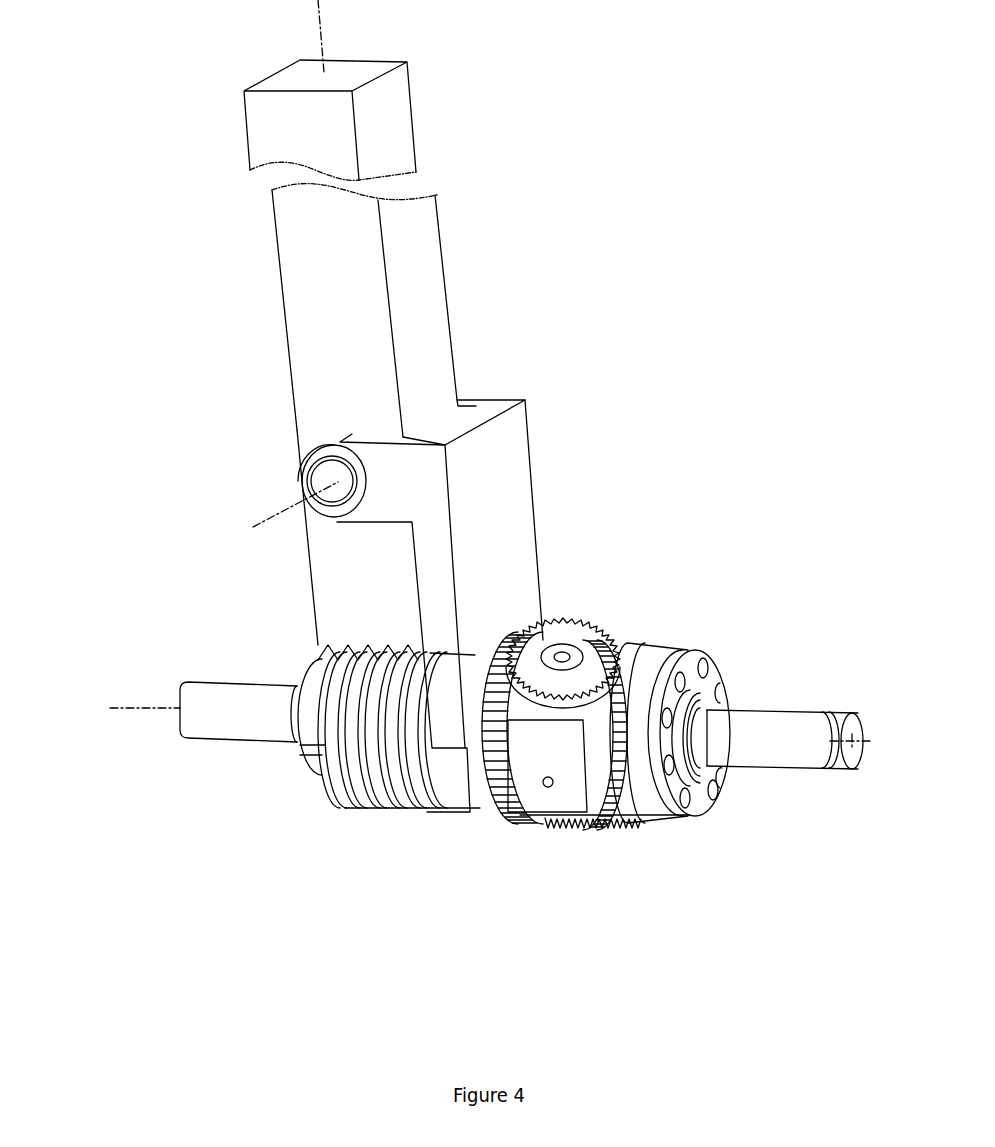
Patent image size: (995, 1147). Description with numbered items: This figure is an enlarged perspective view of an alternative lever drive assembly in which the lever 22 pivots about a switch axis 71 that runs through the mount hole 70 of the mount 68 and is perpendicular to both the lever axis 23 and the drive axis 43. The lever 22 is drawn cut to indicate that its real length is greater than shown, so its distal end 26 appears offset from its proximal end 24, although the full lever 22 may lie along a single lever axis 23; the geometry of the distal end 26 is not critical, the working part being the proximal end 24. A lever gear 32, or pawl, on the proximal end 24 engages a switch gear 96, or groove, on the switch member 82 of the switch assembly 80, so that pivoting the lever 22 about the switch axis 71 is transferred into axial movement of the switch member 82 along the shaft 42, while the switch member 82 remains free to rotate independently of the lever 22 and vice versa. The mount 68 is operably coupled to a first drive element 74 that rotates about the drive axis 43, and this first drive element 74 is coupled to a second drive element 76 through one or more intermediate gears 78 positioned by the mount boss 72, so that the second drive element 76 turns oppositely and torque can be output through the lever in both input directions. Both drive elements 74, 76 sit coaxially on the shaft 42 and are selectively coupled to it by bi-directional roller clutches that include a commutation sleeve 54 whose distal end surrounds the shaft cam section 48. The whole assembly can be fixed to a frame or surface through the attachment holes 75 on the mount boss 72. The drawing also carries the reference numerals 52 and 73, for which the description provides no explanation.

The lever 22 is at (205, 235).
The lever axis 23 is at (317, 20).
The lever proximal end 24 is at (282, 600).
The lever distal end 26 is at (243, 85).
The lever gear 32 is at (320, 648).
The shaft 42 is at (762, 807).
The drive axis 43 is at (873, 744).
The shaft cam section 48 is at (755, 694).
The output shaft 52 is at (812, 692).
The commutation sleeve 54 is at (754, 665).
The mount 68 is at (562, 452).
The mount hole 70 is at (357, 437).
The switch axis 71 is at (252, 508).
The mount boss 72 is at (530, 797).
The pin bore 73 is at (318, 482).
The first drive element 74 is at (483, 785).
The attachment holes 75 is at (565, 655).
The second drive element 76 is at (663, 793).
The intermediate gears 78 is at (590, 642).
The switch assembly 80 is at (278, 785).
The switch member 82 is at (373, 860).
The switch gear 96 is at (348, 793).